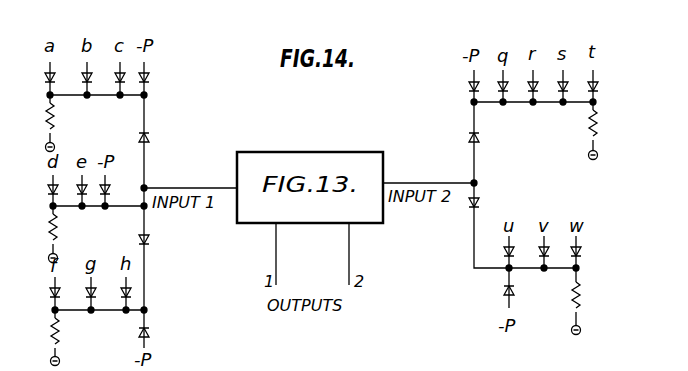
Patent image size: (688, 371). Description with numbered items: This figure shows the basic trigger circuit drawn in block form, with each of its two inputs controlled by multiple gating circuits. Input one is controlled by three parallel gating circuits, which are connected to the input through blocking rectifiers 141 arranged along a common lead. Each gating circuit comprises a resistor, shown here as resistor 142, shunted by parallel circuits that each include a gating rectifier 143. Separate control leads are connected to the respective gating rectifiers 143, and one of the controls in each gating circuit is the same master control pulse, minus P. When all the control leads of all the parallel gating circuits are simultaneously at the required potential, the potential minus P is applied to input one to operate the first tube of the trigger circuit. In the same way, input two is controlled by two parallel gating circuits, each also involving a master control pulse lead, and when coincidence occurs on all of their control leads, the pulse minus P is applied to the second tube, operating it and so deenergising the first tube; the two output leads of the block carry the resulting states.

The blocking rectifiers 141 is at (146, 237).
The resistor 142 is at (71, 123).
The gating rectifier 143 is at (140, 70).